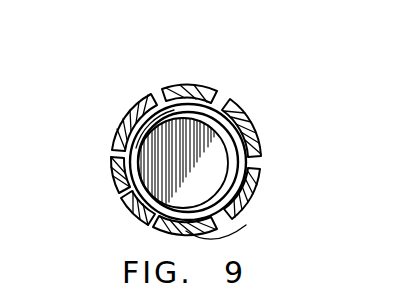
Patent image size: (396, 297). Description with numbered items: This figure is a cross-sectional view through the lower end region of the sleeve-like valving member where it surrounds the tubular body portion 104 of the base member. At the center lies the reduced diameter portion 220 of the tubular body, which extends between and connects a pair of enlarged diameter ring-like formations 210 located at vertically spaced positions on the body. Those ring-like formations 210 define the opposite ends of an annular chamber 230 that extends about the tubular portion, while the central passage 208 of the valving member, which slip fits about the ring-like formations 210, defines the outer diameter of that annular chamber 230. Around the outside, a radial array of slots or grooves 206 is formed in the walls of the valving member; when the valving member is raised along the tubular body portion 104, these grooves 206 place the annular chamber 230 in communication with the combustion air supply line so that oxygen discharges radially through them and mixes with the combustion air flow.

The tubular body portion 104 is at (127, 182).
The slots or grooves 206 is at (154, 100).
The central passage 208 is at (206, 90).
The ring-like formations 210 is at (232, 228).
The reduced diameter portion 220 is at (261, 145).
The annular chamber 230 is at (141, 101).